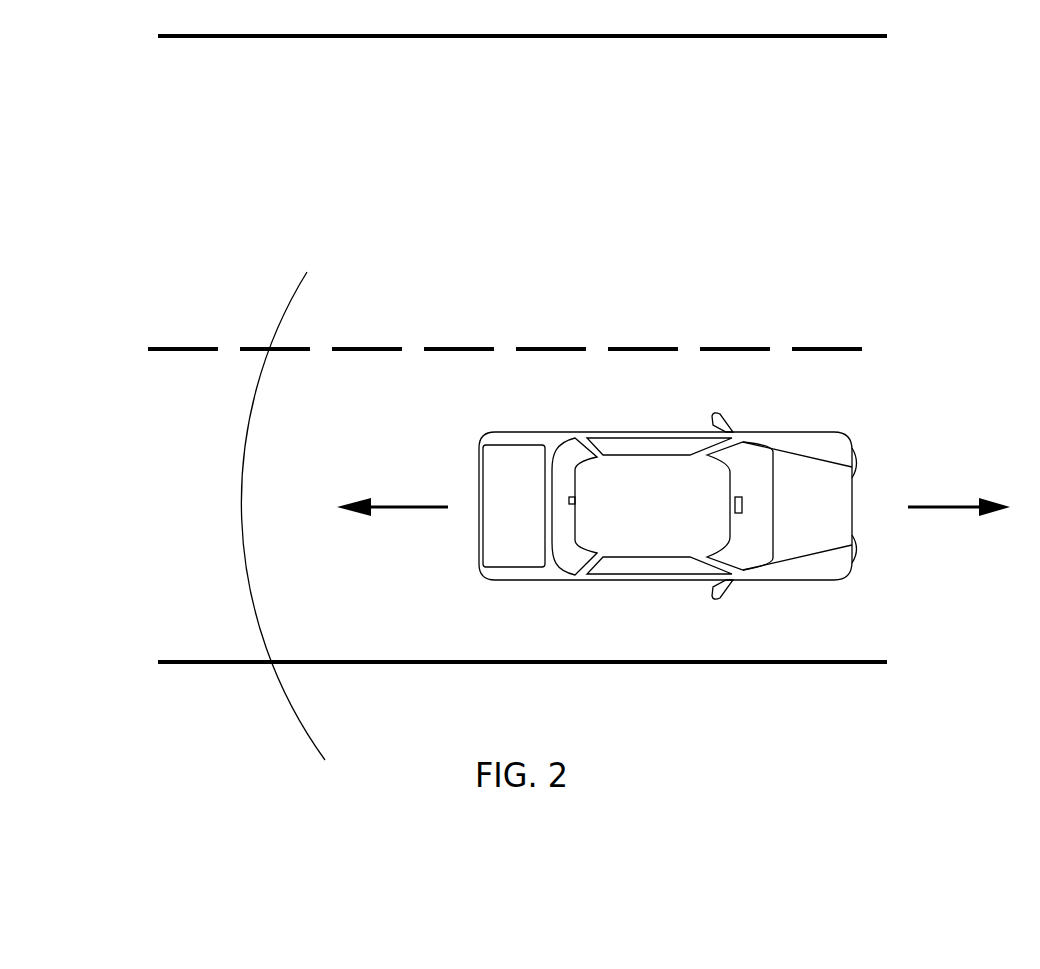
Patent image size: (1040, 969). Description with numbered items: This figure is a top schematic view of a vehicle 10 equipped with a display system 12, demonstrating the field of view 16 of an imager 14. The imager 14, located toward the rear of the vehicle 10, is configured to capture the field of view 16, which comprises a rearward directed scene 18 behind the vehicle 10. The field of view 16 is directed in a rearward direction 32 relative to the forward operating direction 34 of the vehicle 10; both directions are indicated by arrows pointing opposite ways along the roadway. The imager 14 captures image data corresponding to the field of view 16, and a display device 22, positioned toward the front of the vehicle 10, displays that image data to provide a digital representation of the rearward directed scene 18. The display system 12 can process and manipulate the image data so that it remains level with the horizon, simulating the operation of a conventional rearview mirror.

The vehicle 10 is at (668, 504).
The display system 12 is at (753, 560).
The imager 14 is at (576, 497).
The field of view 16 is at (328, 437).
The rearward directed scene 18 is at (101, 303).
The display device 22 is at (738, 497).
The rearward direction 32 is at (402, 508).
The forward operating direction 34 is at (943, 508).